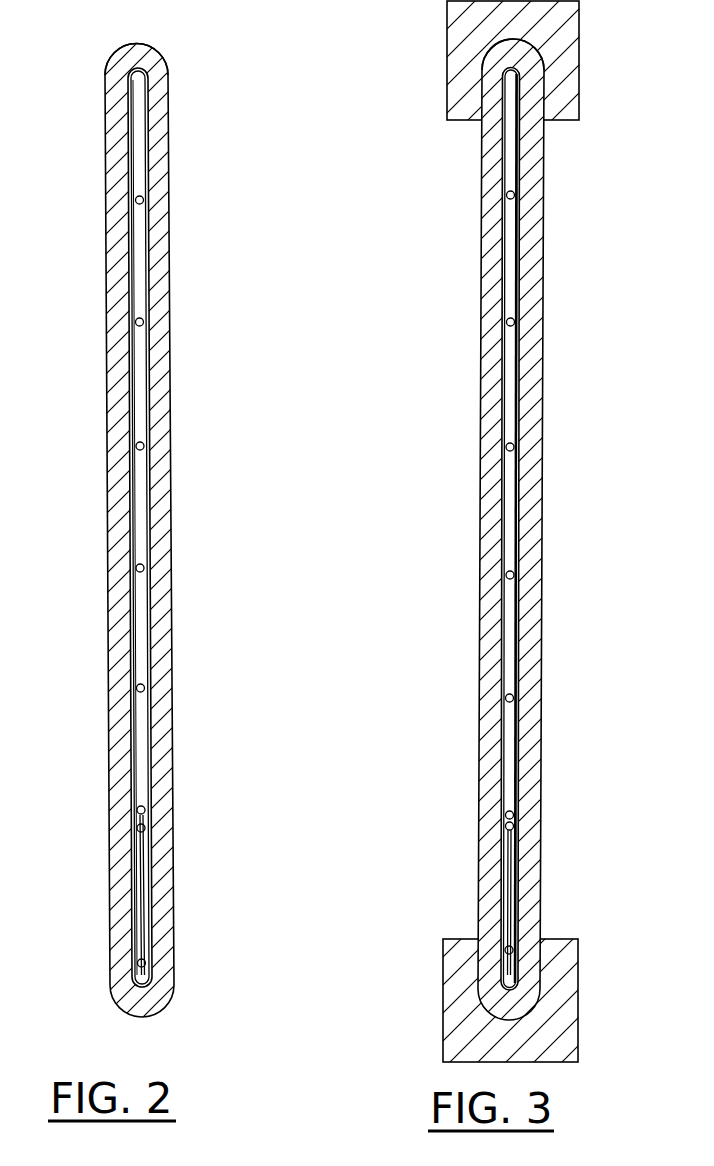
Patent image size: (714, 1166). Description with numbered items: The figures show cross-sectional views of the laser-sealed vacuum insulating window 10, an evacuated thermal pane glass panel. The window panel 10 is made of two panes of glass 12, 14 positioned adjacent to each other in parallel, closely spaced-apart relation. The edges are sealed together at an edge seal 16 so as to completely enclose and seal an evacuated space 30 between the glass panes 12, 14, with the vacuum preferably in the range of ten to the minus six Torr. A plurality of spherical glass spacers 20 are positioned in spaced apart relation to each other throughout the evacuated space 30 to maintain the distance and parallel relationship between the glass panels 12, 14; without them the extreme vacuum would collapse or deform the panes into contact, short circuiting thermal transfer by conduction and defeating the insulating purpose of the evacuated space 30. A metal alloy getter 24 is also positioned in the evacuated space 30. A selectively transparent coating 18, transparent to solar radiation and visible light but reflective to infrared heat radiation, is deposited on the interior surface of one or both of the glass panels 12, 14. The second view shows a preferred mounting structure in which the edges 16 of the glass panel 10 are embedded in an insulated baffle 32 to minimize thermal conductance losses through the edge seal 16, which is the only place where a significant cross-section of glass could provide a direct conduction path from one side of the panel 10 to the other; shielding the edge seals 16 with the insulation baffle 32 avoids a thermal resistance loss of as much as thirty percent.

In FIG. 2, the laser-sealed vacuum insulating window 10 is at (100, 57).
In FIG. 3, the laser-sealed vacuum insulating window 10 is at (474, 150).
In FIG. 2, the glass pane 12 is at (108, 176).
In FIG. 3, the glass pane 12 is at (482, 257).
In FIG. 2, the glass pane 14 is at (168, 163).
In FIG. 3, the glass pane 14 is at (544, 200).
In FIG. 2, the edge seal 16 is at (157, 52).
In FIG. 3, the edge seal 16 is at (529, 48).
In FIG. 2, the selectively transparent coating 18 is at (132, 276).
In FIG. 3, the selectively transparent coating 18 is at (505, 488).
In FIG. 2, the spherical glass spacer 20 is at (144, 197).
In FIG. 3, the spherical glass spacer 20 is at (514, 318).
In FIG. 2, the metal alloy getter 24 is at (140, 897).
In FIG. 3, the metal alloy getter 24 is at (505, 872).
In FIG. 2, the evacuated space 30 is at (137, 404).
In FIG. 3, the evacuated space 30 is at (508, 387).
In FIG. 3, the insulated baffle 32 is at (579, 65).